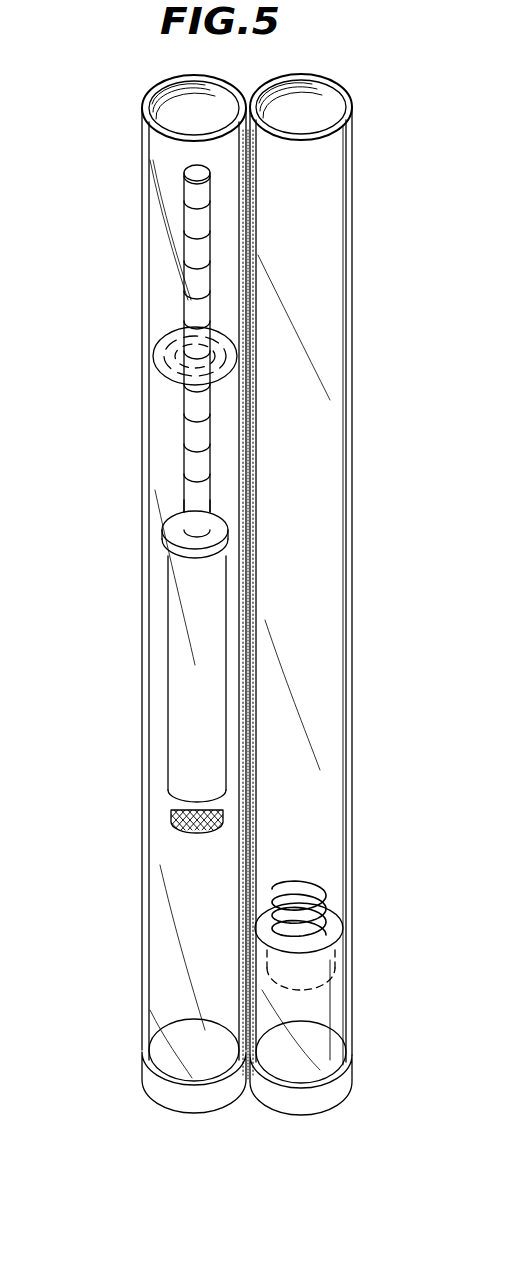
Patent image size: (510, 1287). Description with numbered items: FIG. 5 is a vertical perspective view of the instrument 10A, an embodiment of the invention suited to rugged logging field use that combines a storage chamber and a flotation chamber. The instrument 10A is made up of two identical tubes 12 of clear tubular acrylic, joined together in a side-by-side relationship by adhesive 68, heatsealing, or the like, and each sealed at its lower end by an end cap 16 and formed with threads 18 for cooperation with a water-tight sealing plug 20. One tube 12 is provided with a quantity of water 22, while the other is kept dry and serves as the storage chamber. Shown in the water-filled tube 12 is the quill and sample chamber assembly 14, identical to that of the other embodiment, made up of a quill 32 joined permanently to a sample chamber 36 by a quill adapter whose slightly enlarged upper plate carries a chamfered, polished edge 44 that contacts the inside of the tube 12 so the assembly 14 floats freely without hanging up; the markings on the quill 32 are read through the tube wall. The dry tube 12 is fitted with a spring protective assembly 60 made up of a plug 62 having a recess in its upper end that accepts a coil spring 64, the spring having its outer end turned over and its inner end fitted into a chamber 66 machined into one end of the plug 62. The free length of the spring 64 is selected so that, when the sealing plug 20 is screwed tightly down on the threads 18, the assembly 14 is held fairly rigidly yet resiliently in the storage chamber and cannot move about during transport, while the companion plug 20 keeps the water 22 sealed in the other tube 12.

The instrument 10A is at (128, 165).
The tube 12 is at (143, 226).
The quill and sample chamber assembly 14 is at (176, 493).
The end cap 16 is at (150, 1083).
The threads 18 is at (174, 96).
The sealing plug 20 is at (174, 832).
The water 22 is at (158, 400).
The quill 32 is at (184, 290).
The sample chamber 36 is at (166, 683).
The edge 44 is at (162, 540).
The spring protective assembly 60 is at (328, 905).
The plug 62 is at (328, 1013).
The coil spring 64 is at (306, 880).
The chamber 66 is at (342, 975).
The adhesive 68 is at (250, 402).